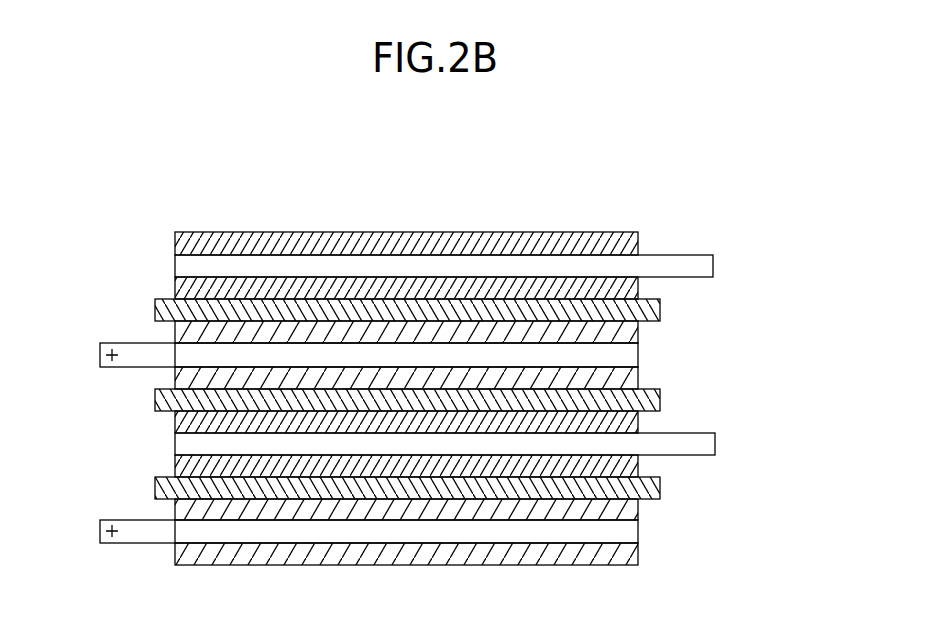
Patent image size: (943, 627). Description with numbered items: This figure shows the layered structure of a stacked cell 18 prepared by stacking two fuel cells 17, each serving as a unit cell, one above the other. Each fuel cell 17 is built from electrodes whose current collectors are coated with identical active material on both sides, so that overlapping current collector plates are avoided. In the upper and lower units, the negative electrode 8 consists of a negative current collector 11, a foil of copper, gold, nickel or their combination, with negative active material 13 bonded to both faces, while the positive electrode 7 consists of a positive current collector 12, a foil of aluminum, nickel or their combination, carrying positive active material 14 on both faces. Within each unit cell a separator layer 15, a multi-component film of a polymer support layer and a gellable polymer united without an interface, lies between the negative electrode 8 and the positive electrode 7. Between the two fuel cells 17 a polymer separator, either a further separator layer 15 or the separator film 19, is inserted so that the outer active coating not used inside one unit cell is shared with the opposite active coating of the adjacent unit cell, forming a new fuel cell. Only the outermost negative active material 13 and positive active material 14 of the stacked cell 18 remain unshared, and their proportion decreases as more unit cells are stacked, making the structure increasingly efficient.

The positive electrode 7 is at (710, 325).
The negative electrode 8 is at (786, 222).
The negative current collector 11 is at (693, 268).
The positive current collector 12 is at (632, 356).
The negative active material 13 is at (638, 241).
The positive active material 14 is at (634, 336).
The separator layer 15 is at (660, 308).
The fuel cell 17 is at (88, 232).
The stacked cell 18 is at (762, 369).
The separator film 19 is at (157, 400).